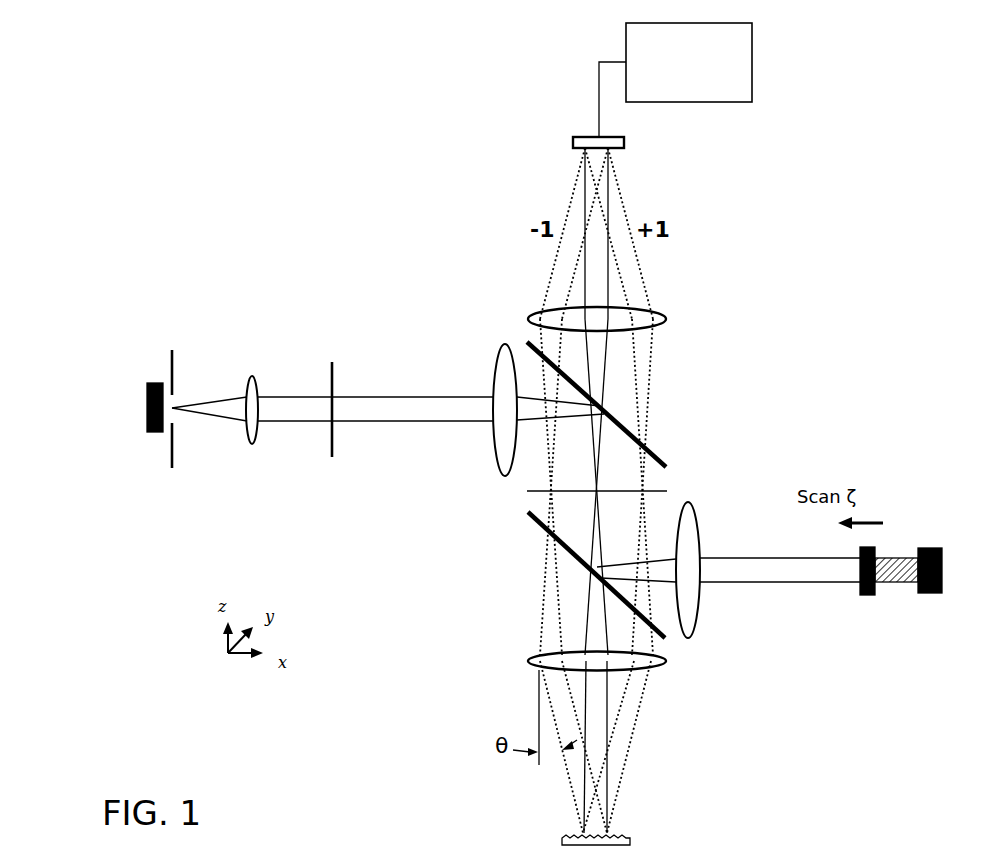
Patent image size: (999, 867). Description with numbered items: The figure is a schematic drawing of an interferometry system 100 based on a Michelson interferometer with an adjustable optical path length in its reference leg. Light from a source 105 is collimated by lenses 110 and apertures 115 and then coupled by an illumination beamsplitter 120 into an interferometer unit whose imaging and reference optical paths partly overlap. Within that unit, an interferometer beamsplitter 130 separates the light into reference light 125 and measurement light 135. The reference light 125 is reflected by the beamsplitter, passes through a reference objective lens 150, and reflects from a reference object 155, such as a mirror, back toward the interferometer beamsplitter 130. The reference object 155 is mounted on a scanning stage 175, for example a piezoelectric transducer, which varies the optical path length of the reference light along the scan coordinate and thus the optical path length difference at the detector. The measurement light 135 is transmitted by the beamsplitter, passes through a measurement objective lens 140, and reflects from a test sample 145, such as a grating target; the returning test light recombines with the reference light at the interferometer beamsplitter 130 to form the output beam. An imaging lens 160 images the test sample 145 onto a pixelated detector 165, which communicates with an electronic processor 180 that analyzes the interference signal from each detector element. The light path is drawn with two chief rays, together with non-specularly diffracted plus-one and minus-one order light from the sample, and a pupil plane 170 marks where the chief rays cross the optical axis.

The interferometry system 100 is at (251, 123).
The source 105 is at (148, 410).
The lenses 110 is at (492, 443).
The apertures 115 is at (332, 361).
The illumination beamsplitter 120 is at (523, 338).
The reference light 125 is at (751, 603).
The interferometer beamsplitter 130 is at (666, 639).
The measurement light 135 is at (570, 588).
The measurement objective lens 140 is at (658, 672).
The test sample 145 is at (562, 837).
The reference objective lens 150 is at (700, 534).
The reference object 155 is at (866, 596).
The imaging lens 160 is at (663, 313).
The detector 165 is at (572, 136).
The pupil plane 170 is at (527, 491).
The scanning stage 175 is at (897, 558).
The electronic processor 180 is at (675, 80).